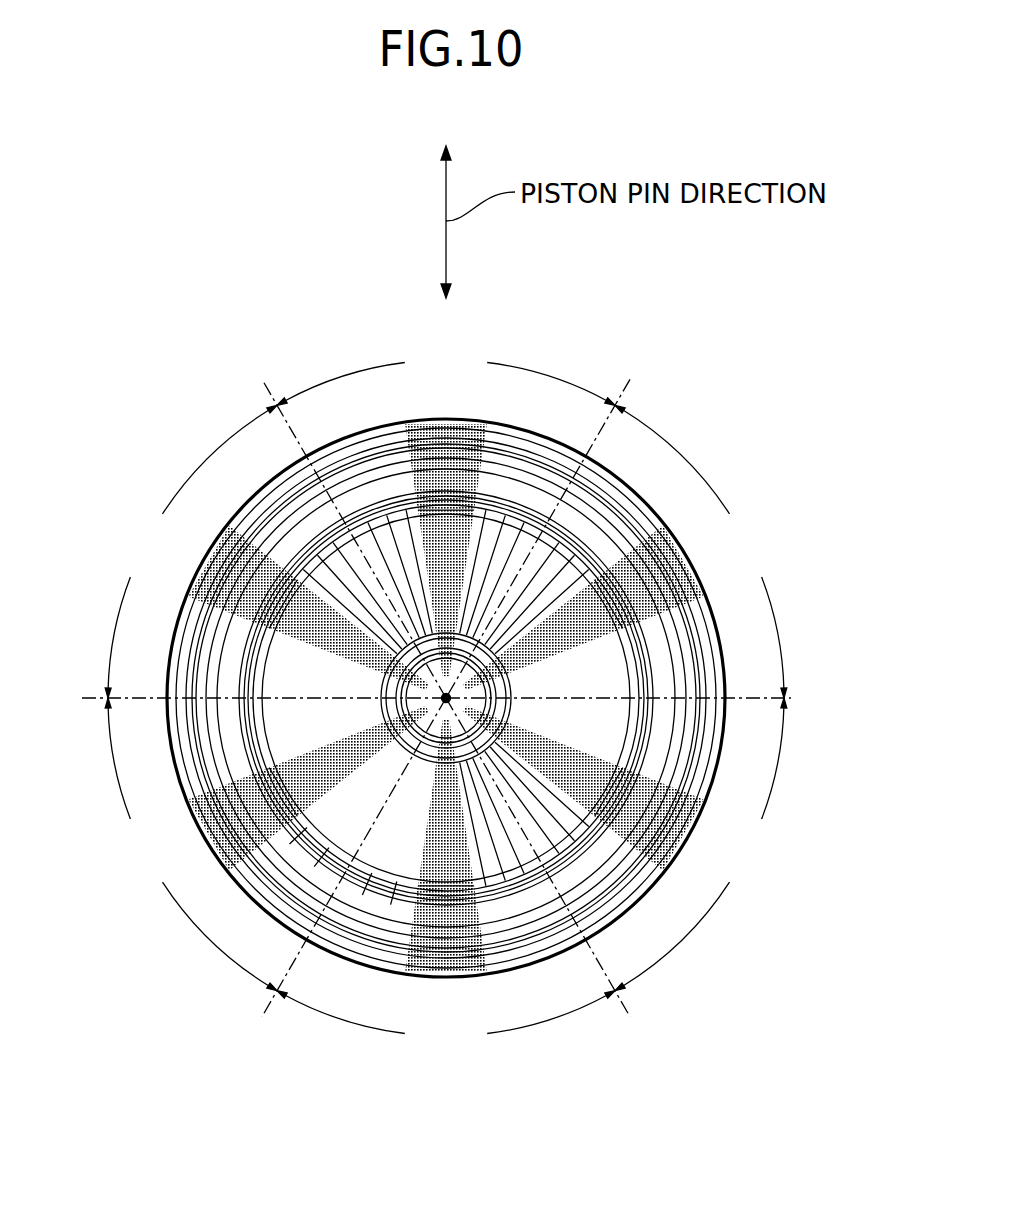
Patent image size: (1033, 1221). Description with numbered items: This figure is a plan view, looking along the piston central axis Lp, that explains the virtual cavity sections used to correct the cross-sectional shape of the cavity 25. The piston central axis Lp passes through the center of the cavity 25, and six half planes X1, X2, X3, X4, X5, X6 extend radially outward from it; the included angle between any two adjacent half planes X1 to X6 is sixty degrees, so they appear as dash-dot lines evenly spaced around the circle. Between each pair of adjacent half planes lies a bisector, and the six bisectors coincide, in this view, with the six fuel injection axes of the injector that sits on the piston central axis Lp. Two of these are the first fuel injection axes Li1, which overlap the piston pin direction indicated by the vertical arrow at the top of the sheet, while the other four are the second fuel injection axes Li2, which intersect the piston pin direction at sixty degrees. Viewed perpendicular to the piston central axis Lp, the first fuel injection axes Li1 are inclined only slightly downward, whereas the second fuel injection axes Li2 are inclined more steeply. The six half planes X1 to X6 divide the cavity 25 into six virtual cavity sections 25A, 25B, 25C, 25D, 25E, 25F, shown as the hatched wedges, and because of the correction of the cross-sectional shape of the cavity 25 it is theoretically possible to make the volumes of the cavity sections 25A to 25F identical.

The cavity 25 is at (597, 514).
The first virtual cavity section 25A is at (446, 424).
The second virtual cavity section 25B is at (685, 563).
The third virtual cavity section 25C is at (685, 833).
The fourth virtual cavity section 25D is at (446, 972).
The fifth virtual cavity section 25E is at (208, 830).
The sixth virtual cavity section 25F is at (208, 566).
The first half plane X1 is at (550, 525).
The second half plane X2 is at (643, 699).
The third half plane X3 is at (550, 875).
The fourth half plane X4 is at (341, 875).
The fifth half plane X5 is at (239, 699).
The sixth half plane X6 is at (342, 524).
The first fuel injection axis Li1 is at (450, 507).
The second fuel injection axis Li2 is at (292, 636).
The piston central axis Lp is at (410, 735).